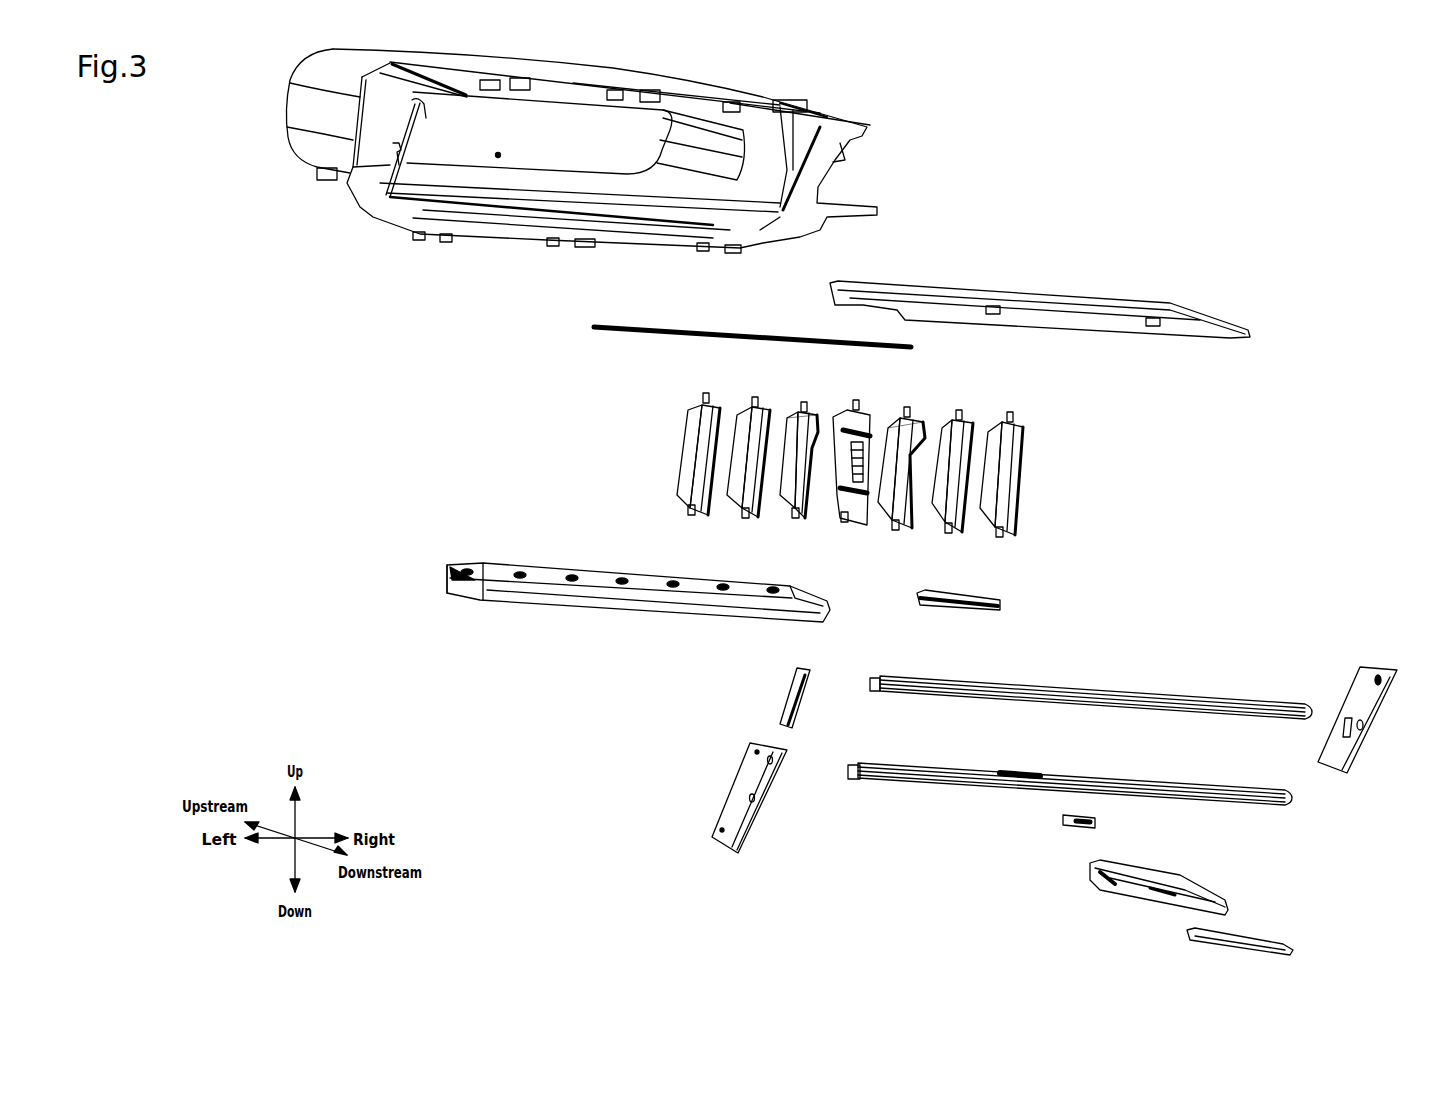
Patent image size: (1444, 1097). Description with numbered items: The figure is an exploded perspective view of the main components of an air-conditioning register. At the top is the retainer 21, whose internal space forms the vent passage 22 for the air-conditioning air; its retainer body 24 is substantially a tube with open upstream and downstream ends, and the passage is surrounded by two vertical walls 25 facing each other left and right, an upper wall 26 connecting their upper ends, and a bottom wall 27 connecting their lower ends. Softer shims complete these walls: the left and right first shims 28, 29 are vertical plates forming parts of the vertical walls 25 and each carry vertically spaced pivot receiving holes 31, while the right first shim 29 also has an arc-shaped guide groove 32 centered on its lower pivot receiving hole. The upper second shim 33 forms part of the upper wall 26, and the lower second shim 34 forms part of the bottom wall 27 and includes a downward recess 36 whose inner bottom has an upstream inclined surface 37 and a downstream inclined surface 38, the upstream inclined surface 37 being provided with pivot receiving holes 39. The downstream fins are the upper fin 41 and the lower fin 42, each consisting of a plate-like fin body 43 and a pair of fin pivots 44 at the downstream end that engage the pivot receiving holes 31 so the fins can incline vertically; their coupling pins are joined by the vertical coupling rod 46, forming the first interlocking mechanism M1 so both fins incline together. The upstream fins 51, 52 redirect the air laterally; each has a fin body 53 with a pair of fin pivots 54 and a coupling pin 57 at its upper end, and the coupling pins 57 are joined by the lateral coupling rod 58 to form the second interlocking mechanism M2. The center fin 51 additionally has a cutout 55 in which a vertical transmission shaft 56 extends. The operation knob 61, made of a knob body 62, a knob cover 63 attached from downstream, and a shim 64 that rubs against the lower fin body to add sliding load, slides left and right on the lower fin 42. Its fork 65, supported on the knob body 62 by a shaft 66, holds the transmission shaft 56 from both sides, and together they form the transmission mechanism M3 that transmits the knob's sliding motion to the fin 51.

The retainer 21 is at (298, 150).
The vent passage 22 is at (498, 158).
The retainer body 24 is at (316, 144).
The vertical walls 25 is at (413, 118).
The upper wall 26 is at (753, 86).
The bottom wall 27 is at (618, 185).
The first shim 28 is at (735, 787).
The first shim 29 is at (1363, 682).
The pivot receiving holes 31 is at (772, 762).
The guide groove 32 is at (1355, 738).
The second shim 33 is at (1105, 298).
The second shim 34 is at (615, 581).
The recess 36 is at (615, 564).
The upstream inclined surface 37 is at (615, 564).
The downstream inclined surface 38 is at (446, 582).
The pivot receiving holes 39 is at (670, 582).
The upper fin 41 is at (1118, 688).
The lower fin 42 is at (1128, 772).
The fin body 43 is at (1076, 722).
The fin pivots 44 is at (875, 695).
The vertical coupling rod 46 is at (787, 692).
The upstream fin 51 is at (856, 476).
The upstream fins 52 is at (795, 518).
The fin body 53 is at (735, 460).
The fin pivots 54 is at (804, 403).
The cutout 55 is at (840, 440).
The transmission shaft 56 is at (870, 435).
The coupling pin 57 is at (745, 405).
The lateral coupling rod 58 is at (685, 325).
The operation knob 61 is at (1243, 813).
The knob body 62 is at (1200, 883).
The knob cover 63 is at (1262, 937).
The shim 64 is at (1097, 820).
The fork 65 is at (985, 592).
The shaft 66 is at (977, 617).
The first interlocking mechanism M1 is at (833, 702).
The second interlocking mechanism M2 is at (670, 372).
The transmission mechanism M3 is at (895, 572).